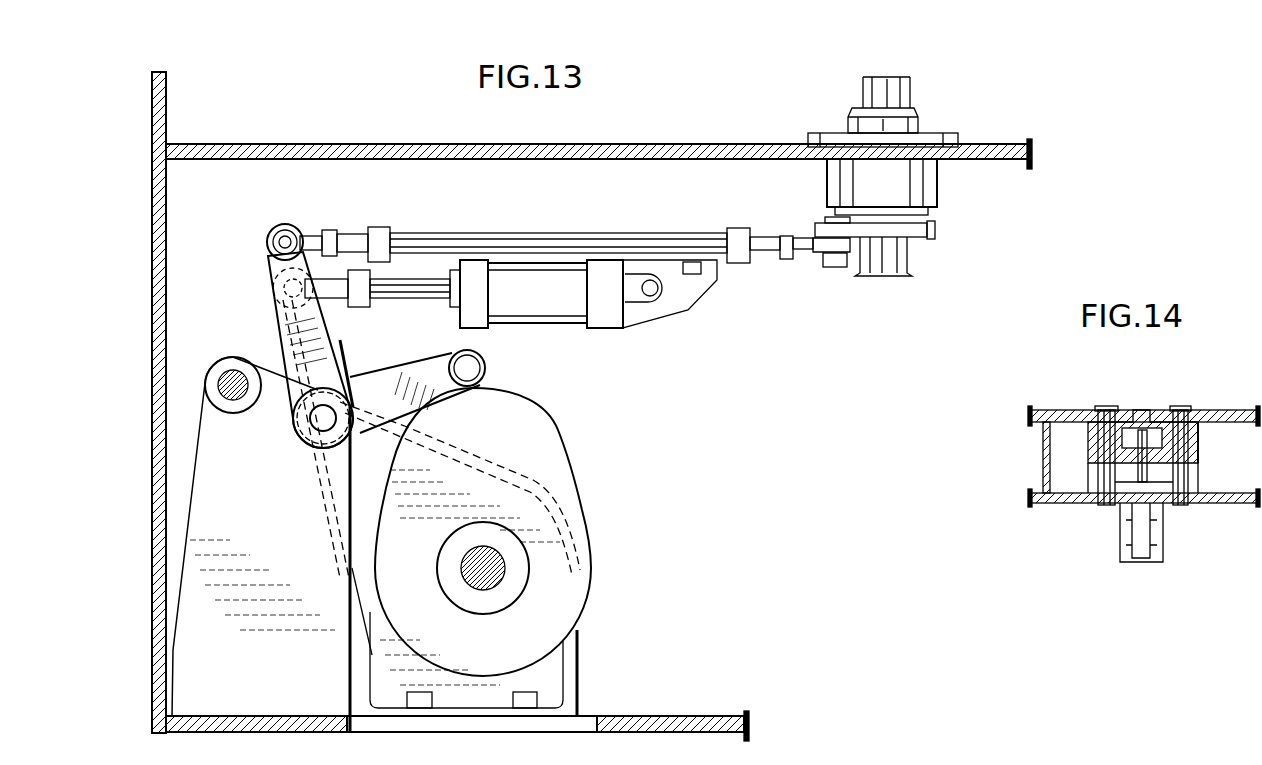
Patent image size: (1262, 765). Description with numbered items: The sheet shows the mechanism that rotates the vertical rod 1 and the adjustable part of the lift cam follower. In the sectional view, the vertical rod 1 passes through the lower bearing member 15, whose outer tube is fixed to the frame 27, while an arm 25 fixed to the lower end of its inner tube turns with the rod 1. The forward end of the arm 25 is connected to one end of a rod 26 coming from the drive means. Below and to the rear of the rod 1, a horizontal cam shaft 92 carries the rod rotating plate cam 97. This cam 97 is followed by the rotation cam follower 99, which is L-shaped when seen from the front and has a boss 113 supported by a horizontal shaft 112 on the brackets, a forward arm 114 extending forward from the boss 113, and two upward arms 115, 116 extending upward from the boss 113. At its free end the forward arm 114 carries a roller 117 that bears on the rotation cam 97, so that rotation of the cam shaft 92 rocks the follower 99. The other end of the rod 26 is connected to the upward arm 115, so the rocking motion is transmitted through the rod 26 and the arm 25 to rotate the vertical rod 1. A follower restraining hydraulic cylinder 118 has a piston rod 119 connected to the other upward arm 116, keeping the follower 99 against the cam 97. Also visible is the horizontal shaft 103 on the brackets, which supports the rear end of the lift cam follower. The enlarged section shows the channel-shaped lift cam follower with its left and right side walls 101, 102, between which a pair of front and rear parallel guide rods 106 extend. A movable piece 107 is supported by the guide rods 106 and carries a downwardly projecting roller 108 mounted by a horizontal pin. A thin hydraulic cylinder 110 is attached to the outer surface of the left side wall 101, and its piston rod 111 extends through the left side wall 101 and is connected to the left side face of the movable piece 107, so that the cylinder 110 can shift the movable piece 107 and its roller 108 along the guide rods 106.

In FIG. 13, the vertical rod 1 is at (914, 92).
In FIG. 13, the lower bearing member 15 is at (920, 125).
In FIG. 13, the arm 25 is at (936, 232).
In FIG. 13, the rod 26 is at (642, 245).
In FIG. 13, the frame 27 is at (720, 152).
In FIG. 13, the cam shaft 92 is at (500, 572).
In FIG. 13, the cam 97 is at (590, 502).
In FIG. 13, the rotation cam follower 99 is at (262, 236).
In FIG. 13, the horizontal shaft 103 is at (237, 402).
In FIG. 13, the horizontal shaft 112 is at (320, 423).
In FIG. 13, the boss 113 is at (322, 483).
In FIG. 13, the forward arm 114 is at (415, 378).
In FIG. 13, the upward arm 115 is at (270, 265).
In FIG. 13, the upward arm 116 is at (280, 296).
In FIG. 13, the roller 117 is at (487, 372).
In FIG. 13, the follower restraining hydraulic cylinder 118 is at (545, 302).
In FIG. 13, the piston rod 119 is at (415, 280).
In FIG. 14, the left side wall 101 is at (1065, 504).
In FIG. 14, the right side wall 102 is at (1070, 410).
In FIG. 14, the guide rods 106 is at (1105, 445).
In FIG. 14, the movable piece 107 is at (1200, 445).
In FIG. 14, the roller 108 is at (1152, 420).
In FIG. 14, the thin hydraulic cylinder 110 is at (1142, 565).
In FIG. 14, the piston rod 111 is at (1140, 484).